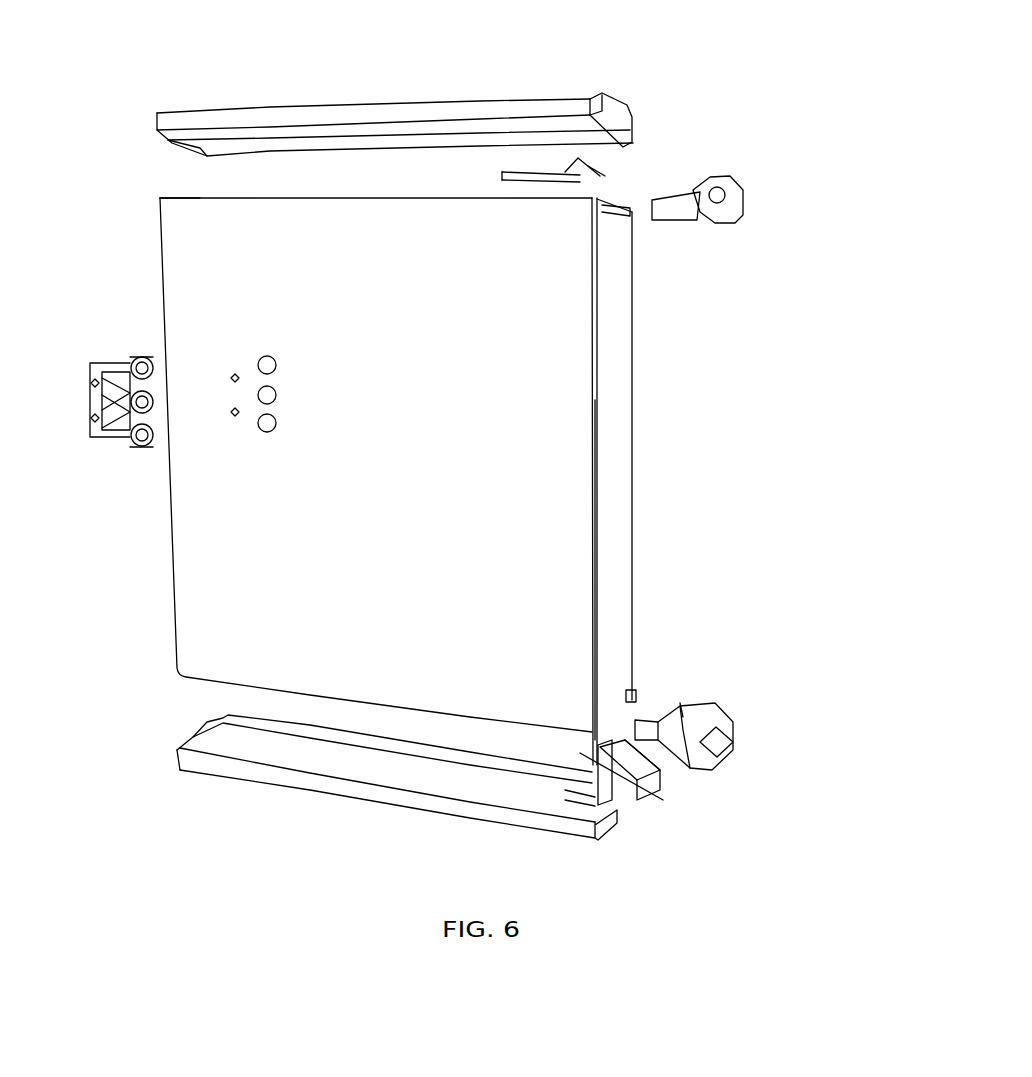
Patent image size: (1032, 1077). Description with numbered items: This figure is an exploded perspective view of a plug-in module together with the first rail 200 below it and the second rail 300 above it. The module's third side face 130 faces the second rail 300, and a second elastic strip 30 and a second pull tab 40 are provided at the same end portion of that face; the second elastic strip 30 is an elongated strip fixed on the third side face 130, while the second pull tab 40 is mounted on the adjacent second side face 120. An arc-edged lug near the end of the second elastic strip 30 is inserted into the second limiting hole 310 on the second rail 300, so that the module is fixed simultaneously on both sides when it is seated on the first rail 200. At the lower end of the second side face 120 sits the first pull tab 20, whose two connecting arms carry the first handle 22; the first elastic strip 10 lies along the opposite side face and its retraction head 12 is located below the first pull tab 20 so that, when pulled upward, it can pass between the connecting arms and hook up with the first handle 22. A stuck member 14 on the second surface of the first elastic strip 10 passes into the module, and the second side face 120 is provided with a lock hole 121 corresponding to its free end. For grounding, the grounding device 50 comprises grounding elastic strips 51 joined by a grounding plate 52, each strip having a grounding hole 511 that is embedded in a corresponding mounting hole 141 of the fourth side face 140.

The first elastic strip 10 is at (673, 805).
The elastic strip retraction head 12 is at (675, 781).
The stuck member 14 is at (605, 829).
The first pull tab 20 is at (768, 736).
The first handle 22 is at (755, 742).
The second elastic strip 30 is at (676, 171).
The second pull tab 40 is at (751, 201).
The grounding device 50 is at (94, 402).
The grounding elastic strip 51 is at (114, 464).
The grounding plate 52 is at (94, 365).
The grounding hole 511 is at (112, 339).
The second side face 120 is at (695, 476).
The lock hole 121 is at (718, 691).
The third side face 130 is at (133, 168).
The fourth side face 140 is at (340, 481).
The mounting hole 141 is at (286, 430).
The first rail 200 is at (397, 791).
The second rail 300 is at (505, 82).
The second limiting hole 310 is at (593, 62).